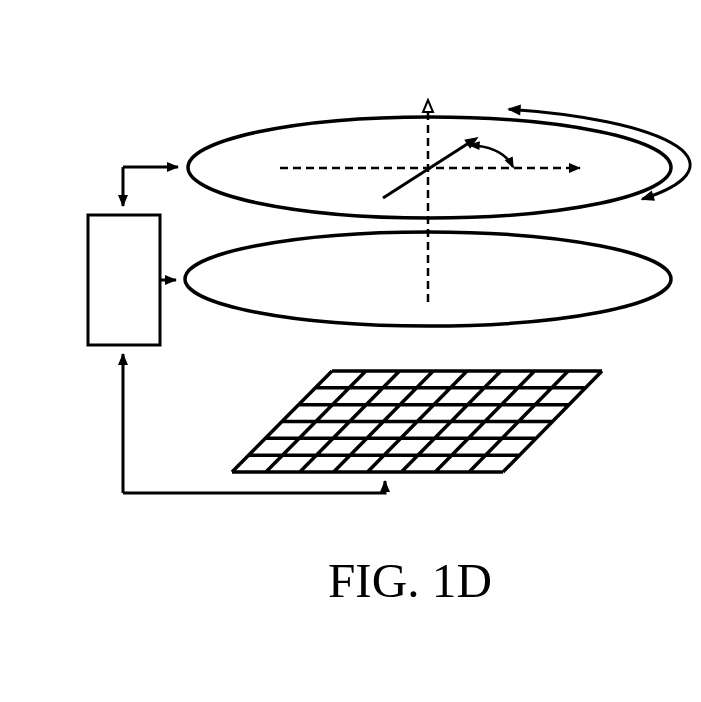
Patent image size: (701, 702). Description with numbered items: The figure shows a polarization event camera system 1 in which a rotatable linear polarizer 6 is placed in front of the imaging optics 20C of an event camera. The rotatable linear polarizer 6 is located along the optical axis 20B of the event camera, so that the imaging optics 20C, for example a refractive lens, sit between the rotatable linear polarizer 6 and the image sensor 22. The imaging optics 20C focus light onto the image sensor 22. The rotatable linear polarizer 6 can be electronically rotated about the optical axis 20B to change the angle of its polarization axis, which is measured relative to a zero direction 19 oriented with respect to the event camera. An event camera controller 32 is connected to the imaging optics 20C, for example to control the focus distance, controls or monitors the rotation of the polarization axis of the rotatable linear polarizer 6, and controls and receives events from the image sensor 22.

The polarization event camera system 1 is at (134, 65).
The rotatable linear polarizer 6 is at (215, 131).
The zero direction 19 is at (350, 155).
The optical axis 20B is at (413, 273).
The imaging optics 20C is at (256, 235).
The image sensor 22 is at (240, 419).
The event camera controller 32 is at (103, 215).